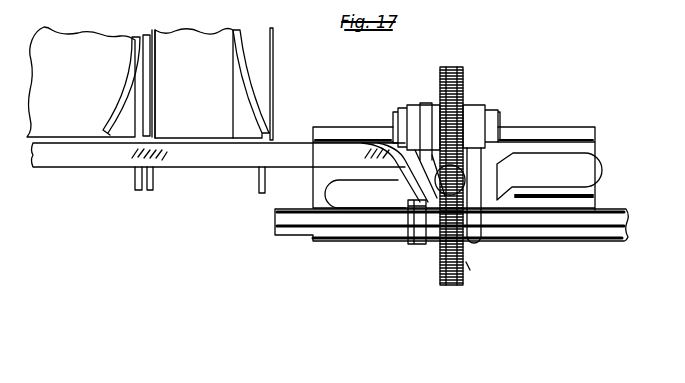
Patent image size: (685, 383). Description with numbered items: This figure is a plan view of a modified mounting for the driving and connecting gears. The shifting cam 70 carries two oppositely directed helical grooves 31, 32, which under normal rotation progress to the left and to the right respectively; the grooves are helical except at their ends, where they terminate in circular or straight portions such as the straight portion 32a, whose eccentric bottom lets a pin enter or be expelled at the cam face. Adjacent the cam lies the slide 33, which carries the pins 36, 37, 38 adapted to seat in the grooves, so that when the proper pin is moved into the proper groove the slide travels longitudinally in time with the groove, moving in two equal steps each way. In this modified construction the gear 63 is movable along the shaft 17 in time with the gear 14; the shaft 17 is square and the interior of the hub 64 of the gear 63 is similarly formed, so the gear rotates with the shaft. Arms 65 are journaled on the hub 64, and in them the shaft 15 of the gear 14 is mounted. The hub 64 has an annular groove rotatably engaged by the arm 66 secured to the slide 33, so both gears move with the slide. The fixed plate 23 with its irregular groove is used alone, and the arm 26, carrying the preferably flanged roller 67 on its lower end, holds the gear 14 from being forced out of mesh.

The gear 14 is at (464, 75).
The shaft 15 is at (499, 117).
The shaft 17 is at (608, 215).
The fixed plate 23 is at (596, 151).
The arm 26 is at (430, 118).
The helical groove 31 is at (133, 66).
The helical groove 32 is at (251, 78).
The straight portion of groove 32a is at (157, 56).
The slide 33 is at (219, 156).
The pin 36 is at (134, 183).
The pin 37 is at (153, 186).
The pin 38 is at (258, 184).
The gear 63 is at (467, 268).
The hub 64 is at (413, 246).
The arms 65 is at (390, 148).
The arm 66 is at (392, 187).
The roller 67 is at (470, 179).
The shifting cam 70 is at (194, 84).